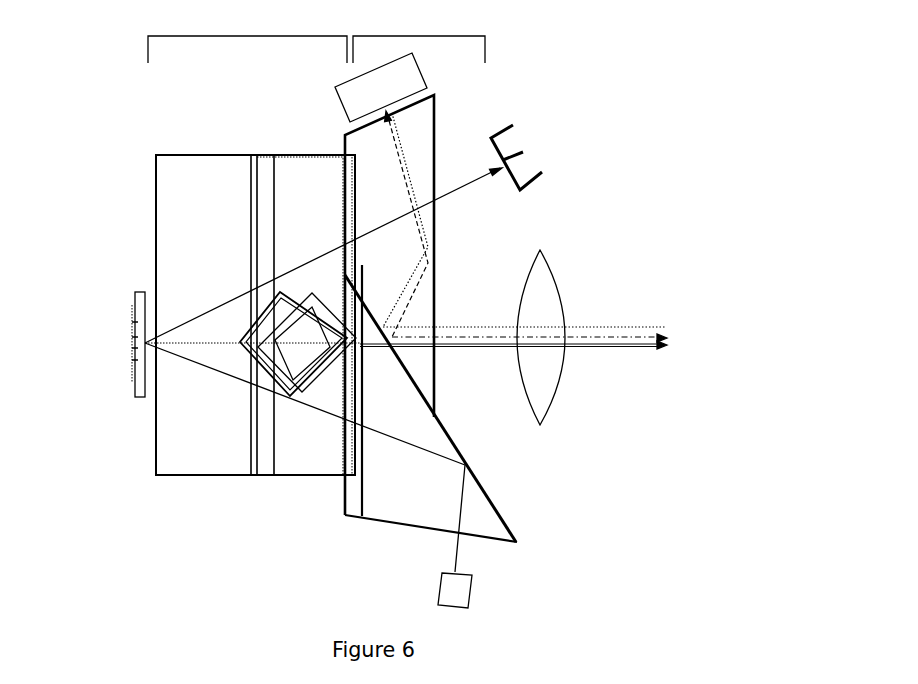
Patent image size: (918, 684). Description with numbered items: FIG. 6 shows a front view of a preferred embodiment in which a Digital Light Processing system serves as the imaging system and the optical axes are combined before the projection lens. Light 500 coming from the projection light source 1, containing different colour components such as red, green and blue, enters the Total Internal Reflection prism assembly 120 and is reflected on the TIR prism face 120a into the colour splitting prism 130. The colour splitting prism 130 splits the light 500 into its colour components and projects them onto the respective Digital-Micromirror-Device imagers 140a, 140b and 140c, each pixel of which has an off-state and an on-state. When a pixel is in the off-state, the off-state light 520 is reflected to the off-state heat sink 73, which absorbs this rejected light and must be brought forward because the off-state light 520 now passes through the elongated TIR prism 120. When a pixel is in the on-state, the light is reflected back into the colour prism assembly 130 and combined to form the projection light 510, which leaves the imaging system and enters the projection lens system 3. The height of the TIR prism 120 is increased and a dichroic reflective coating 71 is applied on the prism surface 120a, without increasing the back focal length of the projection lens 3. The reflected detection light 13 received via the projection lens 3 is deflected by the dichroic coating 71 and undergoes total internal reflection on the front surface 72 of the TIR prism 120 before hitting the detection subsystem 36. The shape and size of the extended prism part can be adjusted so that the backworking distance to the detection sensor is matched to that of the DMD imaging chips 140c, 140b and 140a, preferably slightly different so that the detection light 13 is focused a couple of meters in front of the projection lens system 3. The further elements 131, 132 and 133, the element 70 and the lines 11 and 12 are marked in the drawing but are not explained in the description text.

The colour splitting prism 130 is at (247, 41).
The TIR prism assembly 120 is at (453, 110).
The detection subsystem 36 is at (420, 82).
The housing 133 is at (157, 164).
The optical element 132 is at (298, 155).
The light entrance plate 131 is at (343, 152).
The off-state heat sink 73 is at (522, 160).
The off-state light 520 is at (455, 188).
The front surface of the TIR prism 72 is at (435, 240).
The projection light 510 is at (460, 337).
The projection lens system 3 is at (546, 258).
The reflected detection light 13 is at (663, 326).
The second optical axis 12 is at (633, 335).
The first optical axis 11 is at (632, 350).
The Digital-Micromirror-Device imager 140c is at (133, 360).
The dichroic reflective coating 71 is at (415, 380).
The prism 70 is at (482, 518).
The TIR prism face 120a is at (460, 452).
The light 500 is at (457, 535).
The projection light source 1 is at (455, 590).
The Digital-Micromirror-Device imager 140b is at (240, 342).
The Digital-Micromirror-Device imager 140a is at (350, 322).